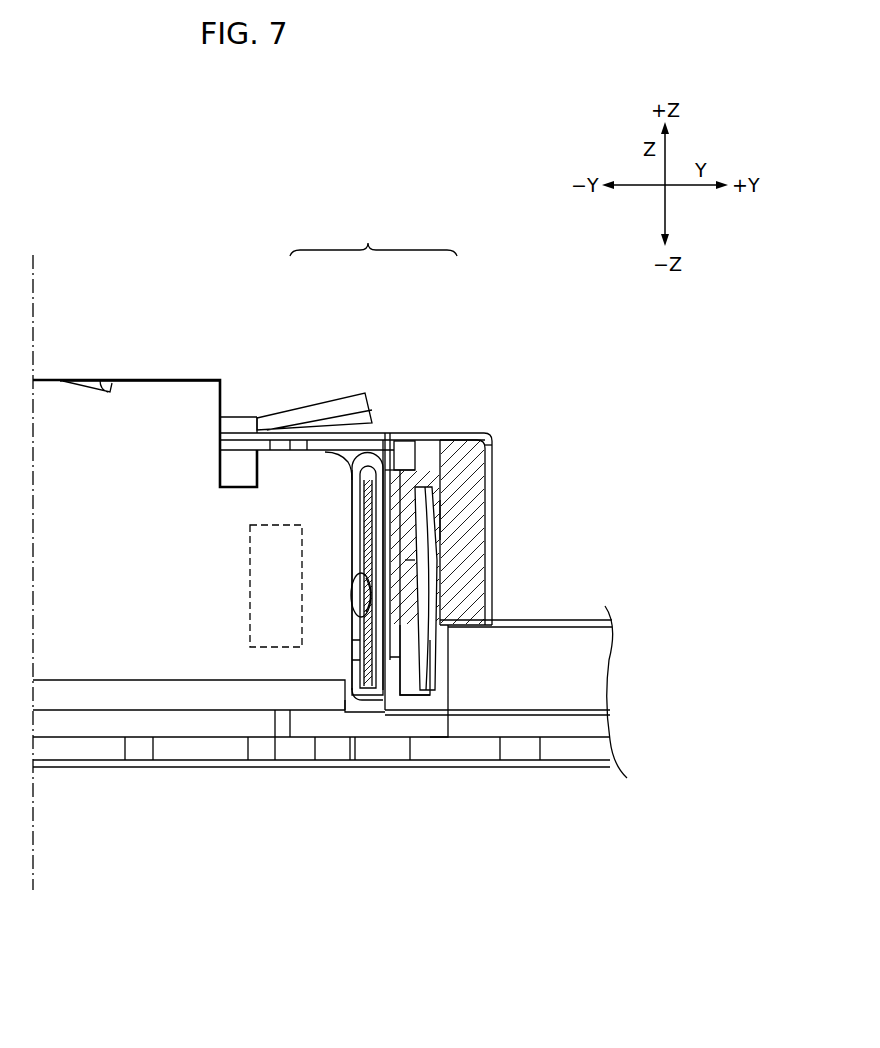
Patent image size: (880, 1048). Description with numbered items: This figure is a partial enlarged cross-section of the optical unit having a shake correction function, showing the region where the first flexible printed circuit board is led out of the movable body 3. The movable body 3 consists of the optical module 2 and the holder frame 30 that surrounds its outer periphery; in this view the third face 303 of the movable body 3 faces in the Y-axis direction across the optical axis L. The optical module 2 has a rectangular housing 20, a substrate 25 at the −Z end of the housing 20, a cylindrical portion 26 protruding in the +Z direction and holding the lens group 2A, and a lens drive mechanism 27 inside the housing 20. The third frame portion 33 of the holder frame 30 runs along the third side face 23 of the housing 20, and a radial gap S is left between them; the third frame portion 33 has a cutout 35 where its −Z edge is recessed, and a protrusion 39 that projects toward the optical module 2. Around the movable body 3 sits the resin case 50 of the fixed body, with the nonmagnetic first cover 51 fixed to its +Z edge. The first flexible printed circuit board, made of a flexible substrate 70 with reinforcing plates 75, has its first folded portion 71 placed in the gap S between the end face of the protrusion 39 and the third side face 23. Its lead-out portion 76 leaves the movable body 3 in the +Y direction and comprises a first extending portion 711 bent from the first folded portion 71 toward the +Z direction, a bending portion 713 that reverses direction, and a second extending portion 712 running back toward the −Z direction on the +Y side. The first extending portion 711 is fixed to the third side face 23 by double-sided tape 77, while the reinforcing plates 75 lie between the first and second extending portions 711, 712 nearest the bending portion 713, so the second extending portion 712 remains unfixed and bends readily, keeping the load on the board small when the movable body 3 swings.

The optical module 2 is at (197, 379).
The lens group 2A is at (66, 381).
The movable body 3 is at (373, 236).
The housing 20 is at (150, 670).
The third side face 23 is at (350, 598).
The substrate 25 is at (57, 700).
The cylindrical portion 26 is at (155, 392).
The lens drive mechanism 27 is at (277, 648).
The holder frame 30 is at (424, 470).
The third frame portion 33 is at (443, 588).
The cutout 35 is at (420, 652).
The protrusion 39 is at (440, 575).
The case 50 is at (463, 482).
The first cover 51 is at (455, 432).
The flexible substrate 70 is at (583, 715).
The first folded portion 71 is at (353, 458).
The reinforcing plates 75 is at (443, 522).
The lead-out portion 76 is at (358, 697).
The double-sided tape 77 is at (352, 650).
The third face 303 is at (443, 457).
The first extending portion 711 is at (350, 462).
The second extending portion 712 is at (415, 466).
The bending portion 713 is at (368, 470).
The optical axis L is at (33, 290).
The gap S is at (363, 706).